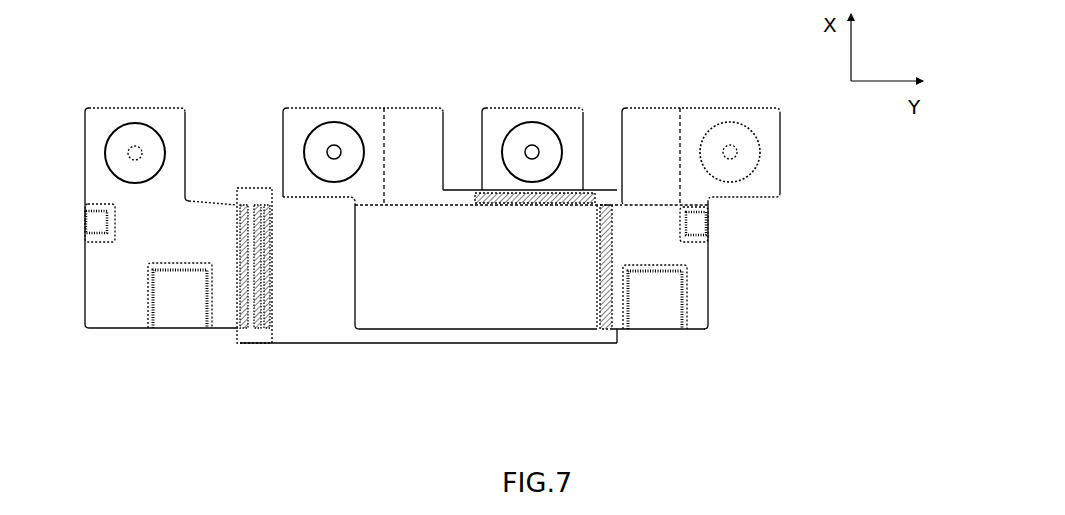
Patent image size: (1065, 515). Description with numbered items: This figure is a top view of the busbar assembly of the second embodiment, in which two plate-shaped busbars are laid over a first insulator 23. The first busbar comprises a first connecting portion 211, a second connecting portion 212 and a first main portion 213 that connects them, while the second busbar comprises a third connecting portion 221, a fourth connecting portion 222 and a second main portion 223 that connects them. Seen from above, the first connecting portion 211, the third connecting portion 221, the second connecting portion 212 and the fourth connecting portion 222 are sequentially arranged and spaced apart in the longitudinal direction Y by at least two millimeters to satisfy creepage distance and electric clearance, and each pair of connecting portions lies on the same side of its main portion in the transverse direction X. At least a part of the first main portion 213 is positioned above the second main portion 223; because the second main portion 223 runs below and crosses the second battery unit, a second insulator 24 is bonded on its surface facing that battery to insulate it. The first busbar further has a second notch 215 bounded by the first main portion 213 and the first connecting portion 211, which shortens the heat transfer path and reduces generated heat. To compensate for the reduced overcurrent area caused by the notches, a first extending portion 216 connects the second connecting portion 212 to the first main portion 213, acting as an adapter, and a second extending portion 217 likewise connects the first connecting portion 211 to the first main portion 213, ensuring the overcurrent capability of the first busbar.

The first connecting portion 211 is at (737, 187).
The second connecting portion 212 is at (297, 162).
The first main portion 213 is at (693, 275).
The second notch 215 is at (733, 243).
The first extending portion 216 is at (403, 120).
The second extending portion 217 is at (667, 120).
The third connecting portion 221 is at (527, 120).
The fourth connecting portion 222 is at (98, 170).
The second main portion 223 is at (123, 312).
The first insulator 23 is at (310, 325).
The second insulator 24 is at (250, 343).